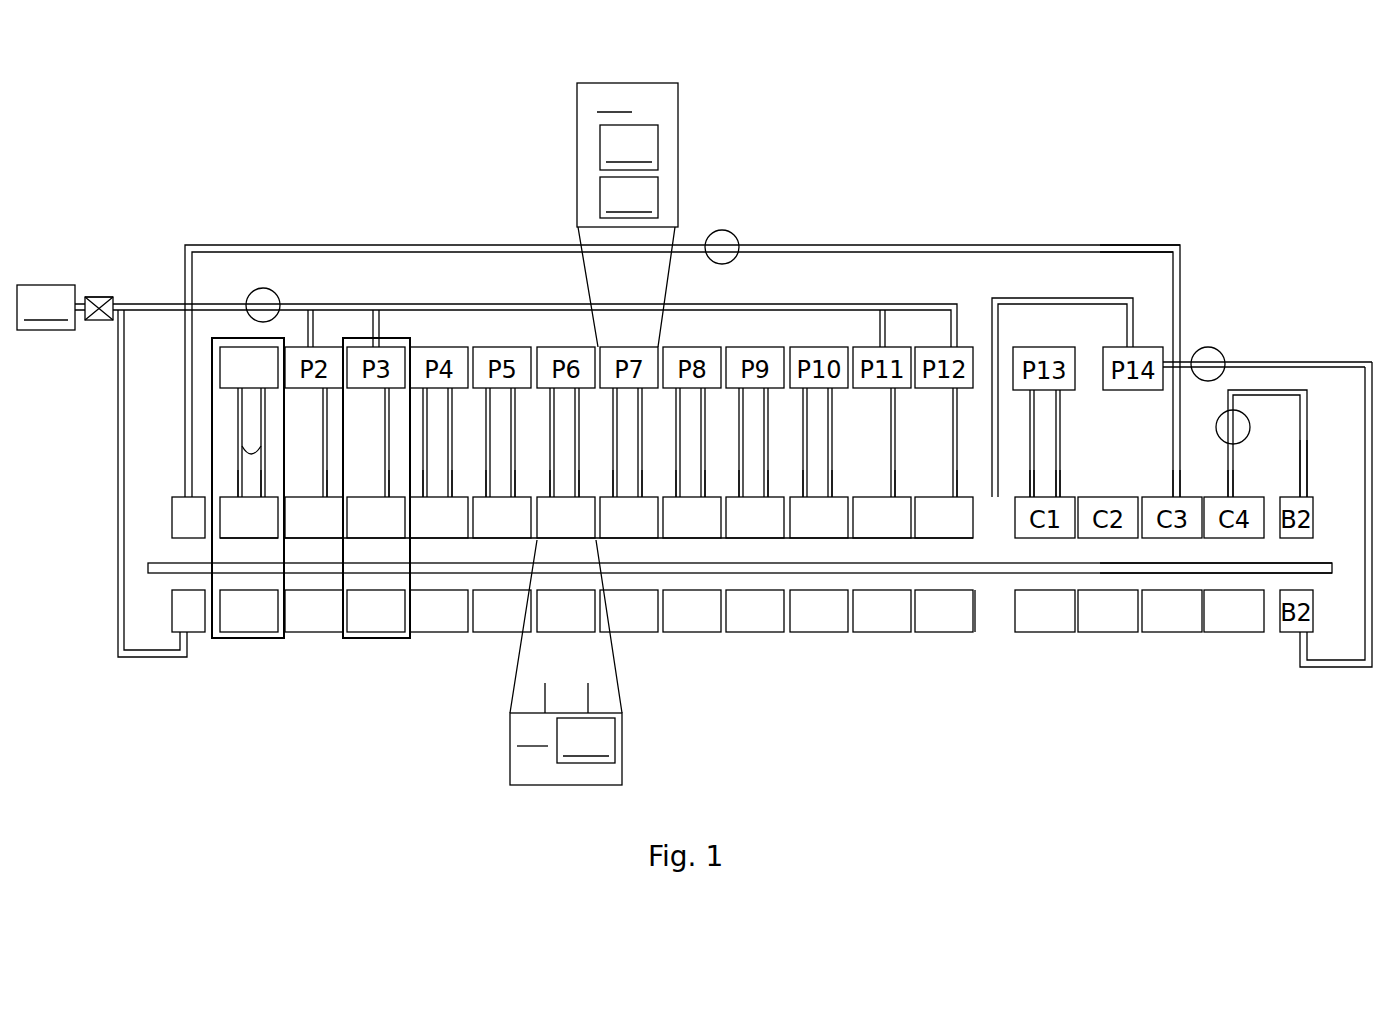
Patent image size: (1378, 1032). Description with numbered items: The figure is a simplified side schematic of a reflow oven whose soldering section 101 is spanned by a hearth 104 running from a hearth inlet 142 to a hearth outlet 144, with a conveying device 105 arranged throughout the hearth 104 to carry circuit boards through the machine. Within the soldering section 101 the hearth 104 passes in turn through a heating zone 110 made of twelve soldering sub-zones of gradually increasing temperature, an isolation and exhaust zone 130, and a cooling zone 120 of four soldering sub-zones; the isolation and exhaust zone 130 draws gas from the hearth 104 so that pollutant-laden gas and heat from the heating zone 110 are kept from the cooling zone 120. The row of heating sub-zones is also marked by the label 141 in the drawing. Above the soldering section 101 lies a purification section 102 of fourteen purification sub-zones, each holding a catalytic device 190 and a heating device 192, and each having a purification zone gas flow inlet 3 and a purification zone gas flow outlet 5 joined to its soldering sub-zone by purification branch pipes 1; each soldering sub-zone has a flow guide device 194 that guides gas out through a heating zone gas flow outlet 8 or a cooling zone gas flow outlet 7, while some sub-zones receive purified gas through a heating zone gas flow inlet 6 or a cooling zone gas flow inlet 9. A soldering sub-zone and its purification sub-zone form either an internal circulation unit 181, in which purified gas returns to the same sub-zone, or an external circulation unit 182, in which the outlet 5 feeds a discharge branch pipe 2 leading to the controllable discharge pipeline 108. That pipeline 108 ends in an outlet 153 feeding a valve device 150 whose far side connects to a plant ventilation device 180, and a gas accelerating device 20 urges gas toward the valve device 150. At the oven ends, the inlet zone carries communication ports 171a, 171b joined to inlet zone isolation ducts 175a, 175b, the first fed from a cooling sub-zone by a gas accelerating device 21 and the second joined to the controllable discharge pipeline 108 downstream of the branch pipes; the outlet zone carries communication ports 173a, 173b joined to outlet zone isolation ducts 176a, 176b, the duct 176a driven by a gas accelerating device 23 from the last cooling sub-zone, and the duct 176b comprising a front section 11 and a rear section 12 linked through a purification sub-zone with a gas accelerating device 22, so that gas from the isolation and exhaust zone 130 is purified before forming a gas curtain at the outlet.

The purification branch pipe 1 is at (252, 467).
The discharge branch pipe 2 is at (313, 327).
The purification zone gas flow inlet 3 is at (265, 392).
The purification zone gas flow outlet 5 is at (306, 340).
The heating zone gas flow inlet 6 is at (238, 494).
The cooling zone gas flow outlet 7 is at (1060, 494).
The heating zone gas flow outlet 8 is at (265, 494).
The cooling zone gas flow inlet 9 is at (1030, 494).
The front section 11 is at (1045, 302).
The rear section 12 is at (1243, 360).
The gas accelerating device 20 is at (265, 290).
The gas accelerating device 21 is at (723, 232).
The gas accelerating device 22 is at (1207, 347).
The gas accelerating device 23 is at (1217, 432).
The soldering section 101 is at (228, 510).
The purification section 102 is at (222, 365).
The hearth 104 is at (258, 548).
The conveying device 105 is at (443, 572).
The controllable discharge pipeline 108 is at (455, 310).
The heating zone 110 is at (233, 633).
The cooling zone 120 is at (1255, 637).
The isolation and exhaust zone 130 is at (1018, 637).
The upper zone row 141 is at (973, 537).
The hearth inlet 142 is at (223, 552).
The hearth outlet 144 is at (1263, 570).
The valve device 150 is at (98, 320).
The outlet 153 is at (112, 297).
The communication port 171a is at (188, 495).
The communication port 171b is at (182, 632).
The communication port 173a is at (1303, 495).
The communication port 173b is at (1303, 633).
The inlet zone isolation duct 175a is at (200, 250).
The inlet zone isolation duct 175b is at (143, 653).
The outlet zone isolation duct 176a is at (1272, 393).
The outlet zone isolation duct 176b is at (1115, 245).
The ventilation device 180 is at (51, 307).
The internal circulation unit 181 is at (245, 340).
The external circulation unit 182 is at (388, 342).
The catalytic device 190 is at (627, 215).
The heating device 192 is at (629, 197).
The flow guide device 194 is at (566, 662).